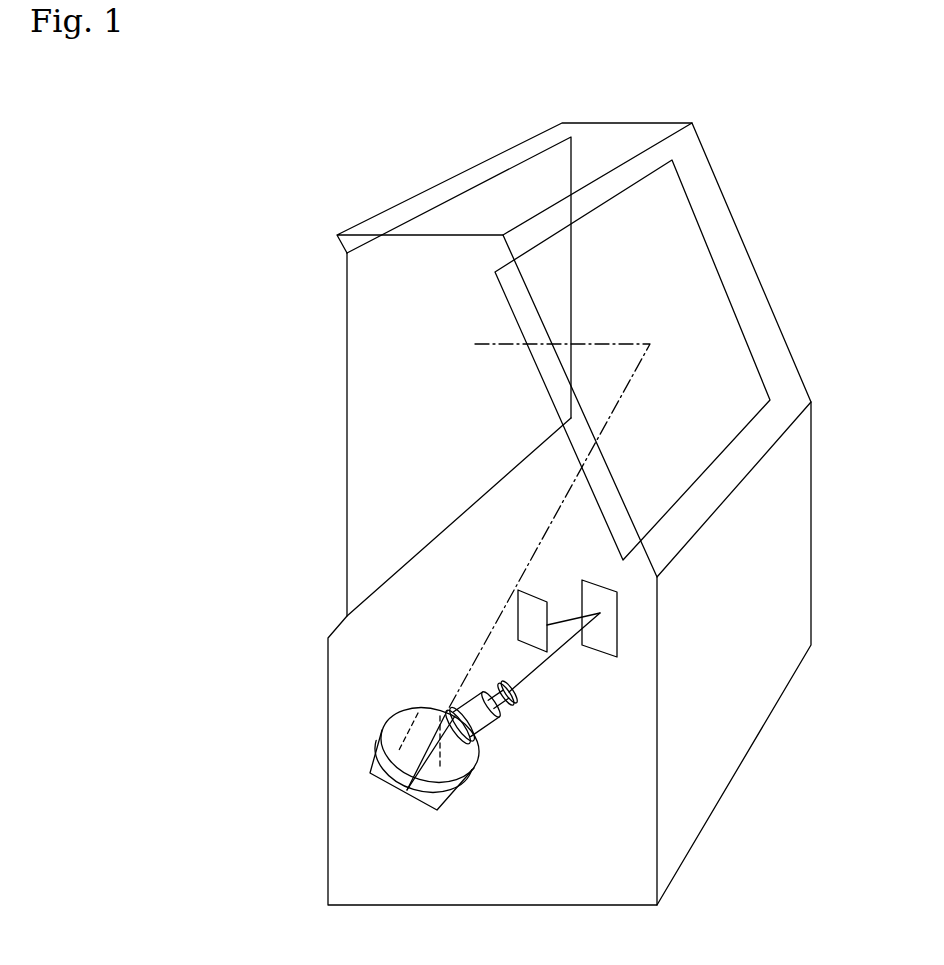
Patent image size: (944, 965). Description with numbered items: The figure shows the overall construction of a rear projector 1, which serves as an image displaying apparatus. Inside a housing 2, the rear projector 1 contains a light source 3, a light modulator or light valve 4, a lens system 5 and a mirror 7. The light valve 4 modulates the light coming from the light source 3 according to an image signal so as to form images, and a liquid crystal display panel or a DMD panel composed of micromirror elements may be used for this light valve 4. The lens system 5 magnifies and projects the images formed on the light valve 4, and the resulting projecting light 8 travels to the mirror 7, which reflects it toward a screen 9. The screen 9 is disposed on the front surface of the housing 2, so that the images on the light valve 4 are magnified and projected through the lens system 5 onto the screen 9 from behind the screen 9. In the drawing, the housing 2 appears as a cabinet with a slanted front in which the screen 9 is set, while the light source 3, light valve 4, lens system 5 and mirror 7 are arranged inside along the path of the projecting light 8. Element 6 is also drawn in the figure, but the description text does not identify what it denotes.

The rear projector 1 is at (648, 90).
The housing 2 is at (700, 752).
The light source 3 is at (530, 588).
The light modulator (light valve) 4 is at (607, 617).
The lens system 5 is at (515, 716).
The lens 6 is at (417, 800).
The mirror 7 is at (727, 335).
The projecting light 8 is at (557, 523).
The screen 9 is at (347, 355).